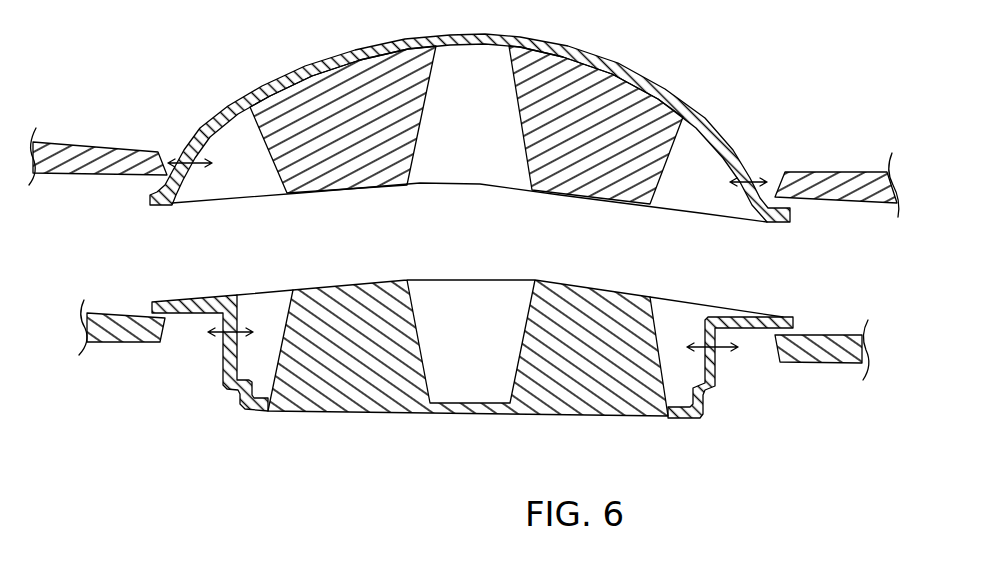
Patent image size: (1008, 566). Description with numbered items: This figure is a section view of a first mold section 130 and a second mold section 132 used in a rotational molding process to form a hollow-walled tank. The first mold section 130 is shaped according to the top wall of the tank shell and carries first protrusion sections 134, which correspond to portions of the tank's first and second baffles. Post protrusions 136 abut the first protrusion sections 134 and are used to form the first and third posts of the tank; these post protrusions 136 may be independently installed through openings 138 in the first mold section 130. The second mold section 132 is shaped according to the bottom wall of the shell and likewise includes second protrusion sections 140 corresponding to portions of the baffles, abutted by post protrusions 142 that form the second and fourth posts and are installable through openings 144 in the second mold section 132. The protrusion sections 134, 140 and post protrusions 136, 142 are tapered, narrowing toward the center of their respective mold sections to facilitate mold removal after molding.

The first mold section 130 is at (165, 73).
The second mold section 132 is at (167, 428).
The first protrusion sections 134 is at (408, 167).
The post protrusions 136 is at (63, 138).
The openings 138 is at (188, 172).
The second protrusion sections 140 is at (417, 305).
The post protrusions 142 is at (125, 347).
The openings 144 is at (220, 343).